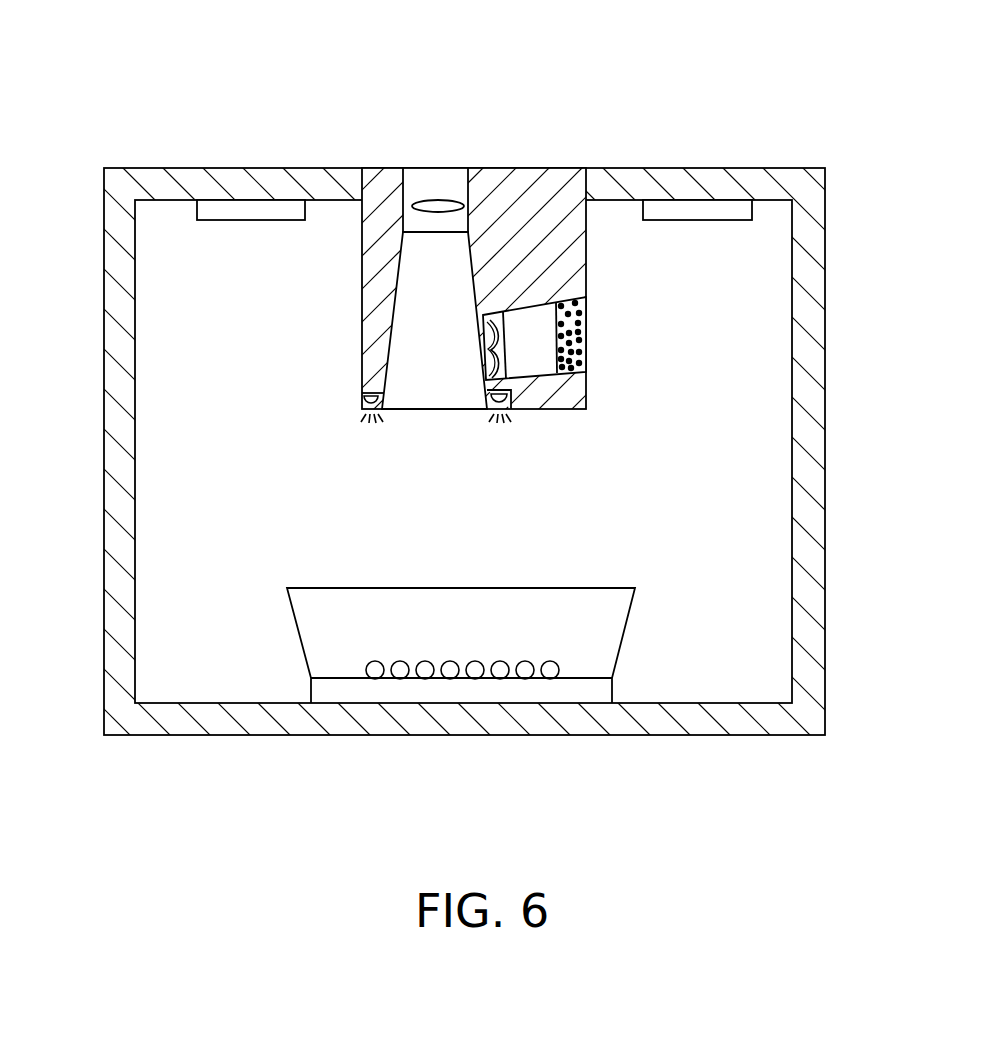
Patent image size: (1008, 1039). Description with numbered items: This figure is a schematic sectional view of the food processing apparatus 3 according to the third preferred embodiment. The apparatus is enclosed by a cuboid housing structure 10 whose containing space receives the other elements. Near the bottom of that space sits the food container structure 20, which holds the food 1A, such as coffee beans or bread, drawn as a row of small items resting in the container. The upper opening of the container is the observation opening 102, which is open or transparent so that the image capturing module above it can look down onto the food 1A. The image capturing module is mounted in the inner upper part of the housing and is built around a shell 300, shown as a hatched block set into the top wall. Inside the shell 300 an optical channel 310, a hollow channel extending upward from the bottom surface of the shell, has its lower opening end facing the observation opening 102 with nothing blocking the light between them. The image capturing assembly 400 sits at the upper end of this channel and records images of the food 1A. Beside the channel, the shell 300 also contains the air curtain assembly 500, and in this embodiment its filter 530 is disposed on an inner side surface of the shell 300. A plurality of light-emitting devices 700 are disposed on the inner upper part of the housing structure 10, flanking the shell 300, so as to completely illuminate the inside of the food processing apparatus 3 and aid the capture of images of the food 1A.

The food processing apparatus 3 is at (138, 37).
The housing structure 10 is at (760, 187).
The observation opening 102 is at (542, 588).
The shell 300 is at (586, 248).
The optical channel 310 is at (415, 333).
The image capturing assembly 400 is at (423, 258).
The air curtain assembly 500 is at (681, 343).
The filter 530 is at (570, 333).
The light-emitting device 700 is at (691, 212).
The food container structure 20 is at (583, 685).
The food 1A is at (375, 679).